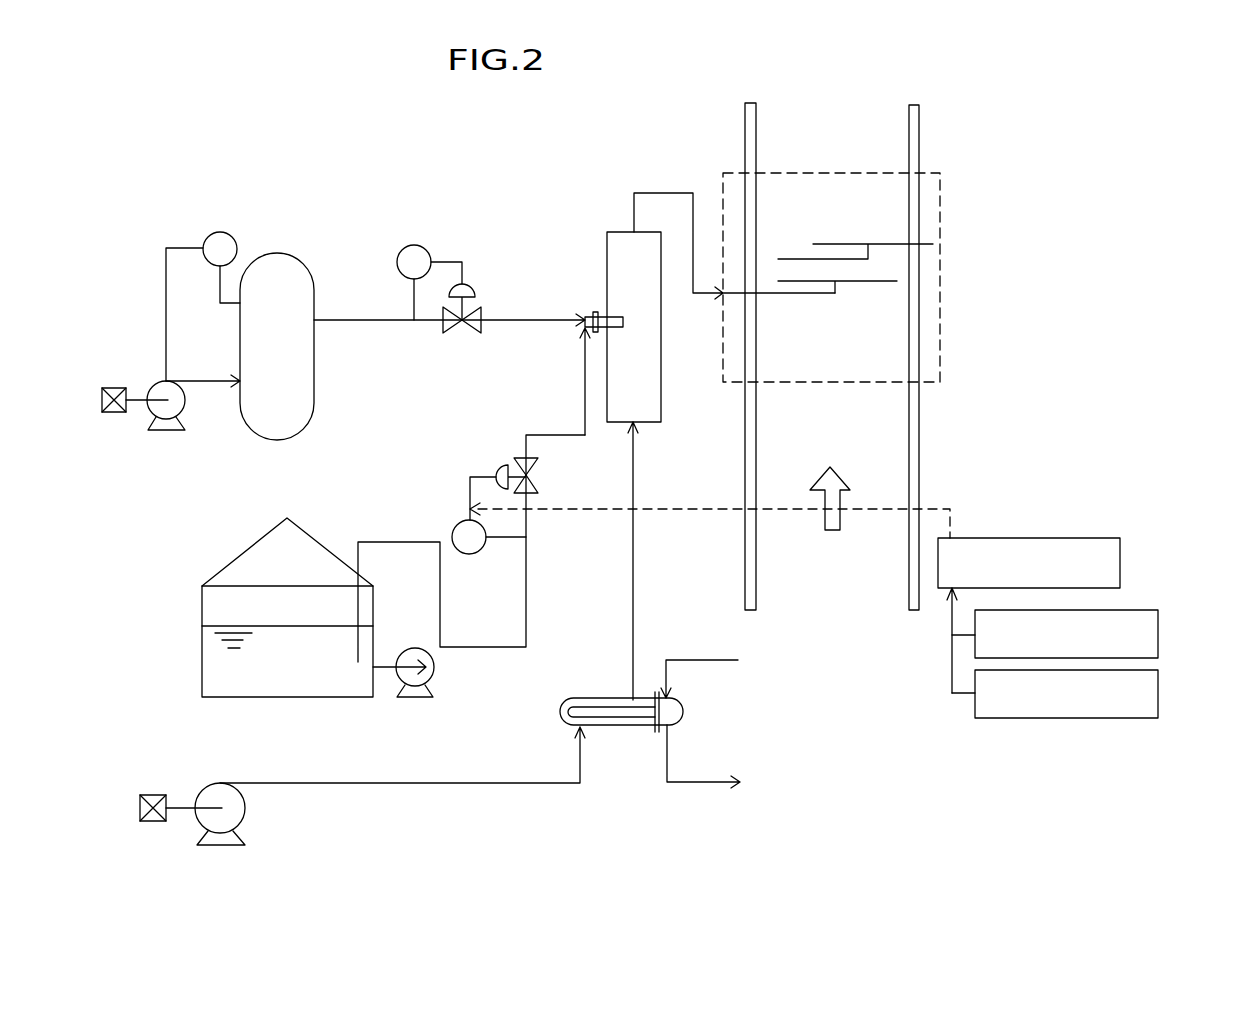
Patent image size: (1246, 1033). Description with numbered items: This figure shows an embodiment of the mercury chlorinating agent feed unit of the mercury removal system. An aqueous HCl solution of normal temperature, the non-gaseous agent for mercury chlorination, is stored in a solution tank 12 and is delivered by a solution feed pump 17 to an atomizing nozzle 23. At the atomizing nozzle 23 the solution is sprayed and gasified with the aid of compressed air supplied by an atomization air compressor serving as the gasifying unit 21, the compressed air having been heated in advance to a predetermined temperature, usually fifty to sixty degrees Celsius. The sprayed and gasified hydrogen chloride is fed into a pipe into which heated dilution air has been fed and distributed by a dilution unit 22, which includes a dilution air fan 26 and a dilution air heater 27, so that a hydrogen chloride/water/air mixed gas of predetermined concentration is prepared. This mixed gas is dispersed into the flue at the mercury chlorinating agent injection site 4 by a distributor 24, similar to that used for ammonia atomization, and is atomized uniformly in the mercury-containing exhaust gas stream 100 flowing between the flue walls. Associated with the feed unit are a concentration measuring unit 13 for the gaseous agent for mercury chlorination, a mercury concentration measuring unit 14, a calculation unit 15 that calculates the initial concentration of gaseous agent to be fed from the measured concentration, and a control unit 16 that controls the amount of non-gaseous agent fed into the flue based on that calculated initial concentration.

The mercury chlorinating agent injection site 4 is at (940, 212).
The solution tank 12 is at (202, 645).
The concentration measuring unit 13 is at (1130, 608).
The mercury concentration measuring unit 14 is at (1158, 692).
The calculation unit 15 is at (1029, 533).
The control unit 16 is at (1015, 538).
The solution feed pump 17 is at (433, 670).
The gasifying unit 21 is at (187, 403).
The dilution unit 22 is at (440, 788).
The atomizing nozzle 23 is at (585, 312).
The distributor 24 is at (897, 247).
The dilution air fan 26 is at (247, 810).
The dilution air heater 27 is at (650, 747).
The mercury-containing exhaust gas stream 100 is at (840, 525).